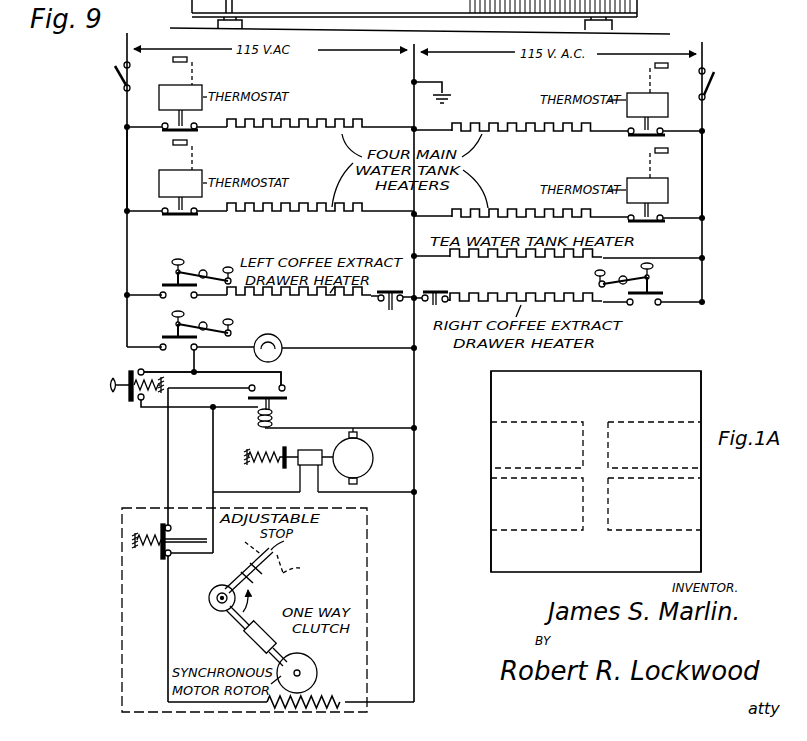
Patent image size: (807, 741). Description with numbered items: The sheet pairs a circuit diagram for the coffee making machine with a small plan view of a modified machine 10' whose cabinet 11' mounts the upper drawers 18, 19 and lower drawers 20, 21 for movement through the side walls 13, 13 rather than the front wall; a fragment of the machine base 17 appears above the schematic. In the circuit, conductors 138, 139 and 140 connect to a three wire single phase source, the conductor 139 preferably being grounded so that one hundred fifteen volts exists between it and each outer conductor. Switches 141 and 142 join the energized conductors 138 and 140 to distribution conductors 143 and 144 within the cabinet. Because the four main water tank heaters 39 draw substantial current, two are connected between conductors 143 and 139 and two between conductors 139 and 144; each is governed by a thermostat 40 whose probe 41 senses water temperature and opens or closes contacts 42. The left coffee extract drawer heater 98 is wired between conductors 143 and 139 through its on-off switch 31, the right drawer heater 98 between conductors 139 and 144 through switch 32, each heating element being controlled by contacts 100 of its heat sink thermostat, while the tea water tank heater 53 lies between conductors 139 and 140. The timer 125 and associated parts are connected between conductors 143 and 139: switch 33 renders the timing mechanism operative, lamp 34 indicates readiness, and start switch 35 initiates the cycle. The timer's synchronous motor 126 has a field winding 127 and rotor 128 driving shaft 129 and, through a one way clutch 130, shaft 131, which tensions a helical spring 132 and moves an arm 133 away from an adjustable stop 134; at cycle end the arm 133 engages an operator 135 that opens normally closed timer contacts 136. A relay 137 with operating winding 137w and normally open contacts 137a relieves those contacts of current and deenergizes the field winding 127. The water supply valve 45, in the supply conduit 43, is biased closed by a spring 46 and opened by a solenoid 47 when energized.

In FIG. 9, the beverage dispensing machine base 17 is at (668, 32).
In FIG. 9, the conductor 138 is at (125, 43).
In FIG. 9, the conductor 139 is at (418, 40).
In FIG. 9, the conductor 140 is at (704, 52).
In FIG. 9, the switch 141 is at (118, 78).
In FIG. 9, the switch 142 is at (716, 78).
In FIG. 9, the distribution conductor 143 is at (125, 173).
In FIG. 9, the distribution conductor 144 is at (706, 172).
In FIG. 9, the thermostat 40 is at (176, 88).
In FIG. 9, the probe 41 is at (188, 58).
In FIG. 9, the contacts 42 is at (170, 125).
In FIG. 9, the main water tank heater 39 is at (308, 126).
In FIG. 9, the heating element 53 is at (520, 260).
In FIG. 9, the heating element 98 is at (348, 300).
In FIG. 9, the contacts 100 is at (396, 311).
In FIG. 9, the on-off switch 31 is at (167, 272).
In FIG. 9, the on-off switch 32 is at (654, 307).
In FIG. 9, the on-off switch 33 is at (148, 326).
In FIG. 9, the indicating lamp 34 is at (278, 338).
In FIG. 9, the start switch 35 is at (131, 409).
In FIG. 9, the relay 137 is at (300, 393).
In FIG. 9, the normally open contacts 137a is at (273, 385).
In FIG. 9, the operating winding 137w is at (276, 418).
In FIG. 9, the solenoid 47 is at (305, 450).
In FIG. 9, the spring 46 is at (261, 450).
In FIG. 9, the supply valve 45 is at (374, 452).
In FIG. 9, the conduit 43 is at (366, 483).
In FIG. 9, the timer 125 is at (117, 506).
In FIG. 9, the timer contacts 136 is at (180, 524).
In FIG. 9, the operator 135 is at (190, 539).
In FIG. 9, the arm 133 is at (240, 573).
In FIG. 9, the adjustable stop 134 is at (286, 558).
In FIG. 9, the helical spring 132 is at (210, 594).
In FIG. 9, the shaft 131 is at (236, 615).
In FIG. 9, the one way clutch 130 is at (243, 643).
In FIG. 9, the shaft 129 is at (282, 647).
In FIG. 9, the rotor 128 is at (318, 670).
In FIG. 9, the synchronous motor 126 is at (346, 677).
In FIG. 9, the field winding 127 is at (340, 700).
In FIG. 1A, the cabinet 11' is at (596, 460).
In FIG. 1A, the modified coffee making machine 10' is at (721, 354).
In FIG. 1A, the side wall 13 is at (491, 390).
In FIG. 1A, the upper drawer 18 is at (482, 442).
In FIG. 1A, the lower drawer 20 is at (485, 509).
In FIG. 1A, the upper drawer 19 is at (704, 453).
In FIG. 1A, the lower drawer 21 is at (704, 517).